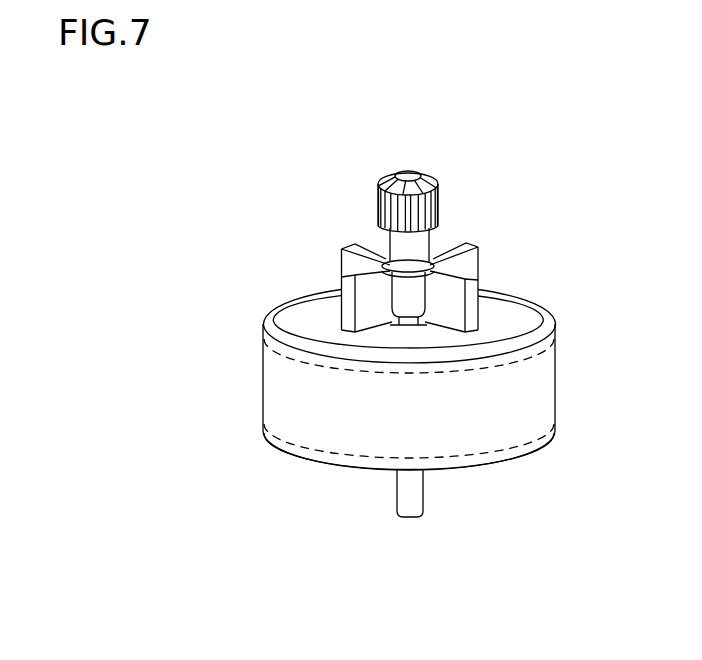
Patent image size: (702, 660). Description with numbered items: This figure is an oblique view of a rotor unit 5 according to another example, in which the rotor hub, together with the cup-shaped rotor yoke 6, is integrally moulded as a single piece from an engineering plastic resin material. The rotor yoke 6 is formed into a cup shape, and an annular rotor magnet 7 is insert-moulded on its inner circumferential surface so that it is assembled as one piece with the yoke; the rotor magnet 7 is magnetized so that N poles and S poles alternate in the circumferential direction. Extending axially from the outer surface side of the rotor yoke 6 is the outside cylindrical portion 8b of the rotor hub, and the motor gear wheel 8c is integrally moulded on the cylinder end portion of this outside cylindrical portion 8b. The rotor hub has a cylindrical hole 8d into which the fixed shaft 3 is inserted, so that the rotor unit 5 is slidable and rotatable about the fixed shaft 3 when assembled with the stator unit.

The rotor unit 5 is at (290, 222).
The rotor yoke 6 is at (300, 307).
The rotor magnet 7 is at (272, 375).
The fixed shaft 3 is at (423, 492).
The outside cylindrical portion 8b is at (397, 246).
The motor gear wheel 8c is at (438, 193).
The cylindrical hole 8d is at (412, 264).